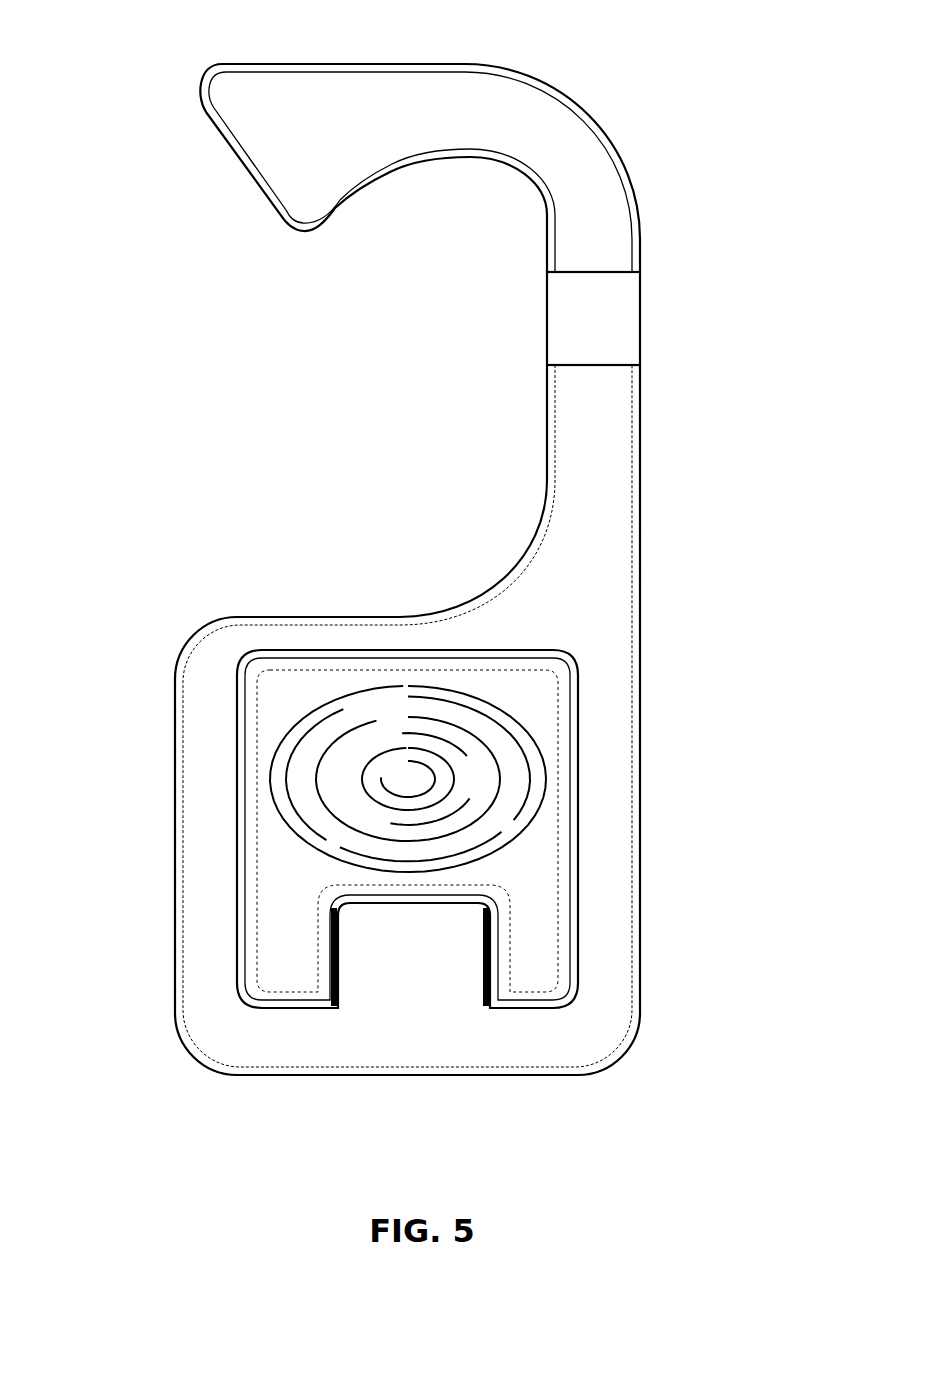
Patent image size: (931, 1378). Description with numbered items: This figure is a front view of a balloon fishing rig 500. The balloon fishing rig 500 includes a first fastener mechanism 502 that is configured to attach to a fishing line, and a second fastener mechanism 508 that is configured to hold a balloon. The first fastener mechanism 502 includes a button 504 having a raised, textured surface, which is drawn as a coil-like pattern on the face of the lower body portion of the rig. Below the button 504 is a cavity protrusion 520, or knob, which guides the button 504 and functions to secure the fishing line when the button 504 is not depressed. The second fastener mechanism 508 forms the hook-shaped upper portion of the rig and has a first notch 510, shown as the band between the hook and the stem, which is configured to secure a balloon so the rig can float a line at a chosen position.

The balloon fishing rig 500 is at (748, 31).
The first fastener mechanism 502 is at (150, 776).
The button 504 is at (400, 710).
The second fastener mechanism 508 is at (380, 284).
The first notch 510 is at (563, 315).
The cavity protrusion 520 is at (408, 1010).